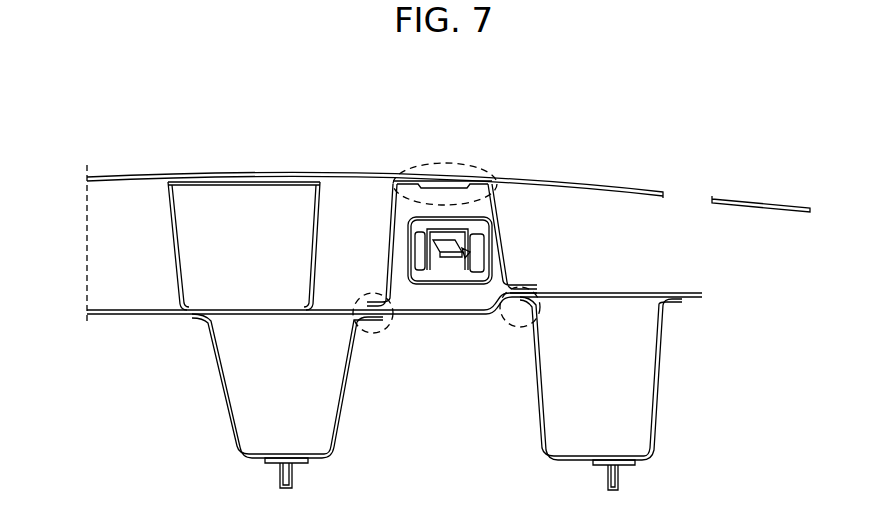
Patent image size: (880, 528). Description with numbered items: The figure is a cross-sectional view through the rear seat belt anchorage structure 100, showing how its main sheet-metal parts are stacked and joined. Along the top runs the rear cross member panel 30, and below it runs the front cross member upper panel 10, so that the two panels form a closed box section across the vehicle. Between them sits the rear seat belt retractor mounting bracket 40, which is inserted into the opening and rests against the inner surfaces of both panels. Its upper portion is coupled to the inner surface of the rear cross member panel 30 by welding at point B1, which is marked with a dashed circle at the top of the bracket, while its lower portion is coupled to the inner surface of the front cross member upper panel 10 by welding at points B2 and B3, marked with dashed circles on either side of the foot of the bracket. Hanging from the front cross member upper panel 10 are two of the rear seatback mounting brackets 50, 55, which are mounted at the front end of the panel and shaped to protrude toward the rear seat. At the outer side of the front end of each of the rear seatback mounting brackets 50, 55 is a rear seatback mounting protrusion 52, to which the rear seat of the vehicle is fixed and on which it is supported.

The rear seat belt anchorage structure 100 is at (386, 94).
The rear cross member panel 30 is at (140, 177).
The front cross member upper panel 10 is at (124, 315).
The rear seat belt retractor mounting bracket 40 is at (499, 238).
The rear seatback mounting bracket 50 is at (657, 395).
The rear seatback mounting bracket 55 is at (230, 398).
The rear seatback mounting protrusion 52 is at (293, 481).
The welding point B1 is at (448, 162).
The welding point B2 is at (366, 331).
The welding point B3 is at (519, 320).